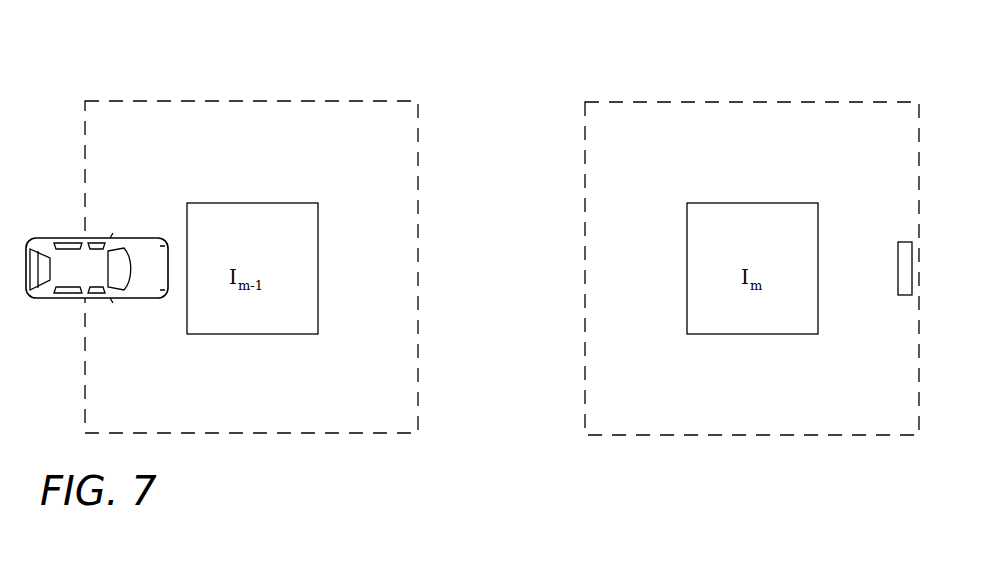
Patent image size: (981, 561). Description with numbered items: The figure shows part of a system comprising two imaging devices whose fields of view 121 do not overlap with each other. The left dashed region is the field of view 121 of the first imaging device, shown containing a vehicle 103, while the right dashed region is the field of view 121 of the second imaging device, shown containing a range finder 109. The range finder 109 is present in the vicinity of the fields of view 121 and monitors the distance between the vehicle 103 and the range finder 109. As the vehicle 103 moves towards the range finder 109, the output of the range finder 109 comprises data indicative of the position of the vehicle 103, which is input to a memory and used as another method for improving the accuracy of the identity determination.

The field of view 121 is at (668, 61).
The vehicle 103 is at (42, 238).
The range finder 109 is at (898, 242).